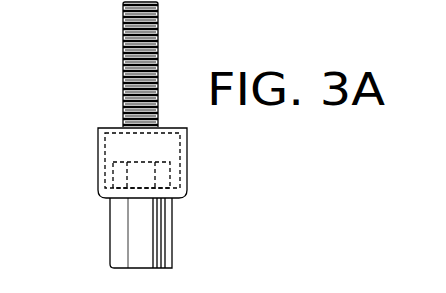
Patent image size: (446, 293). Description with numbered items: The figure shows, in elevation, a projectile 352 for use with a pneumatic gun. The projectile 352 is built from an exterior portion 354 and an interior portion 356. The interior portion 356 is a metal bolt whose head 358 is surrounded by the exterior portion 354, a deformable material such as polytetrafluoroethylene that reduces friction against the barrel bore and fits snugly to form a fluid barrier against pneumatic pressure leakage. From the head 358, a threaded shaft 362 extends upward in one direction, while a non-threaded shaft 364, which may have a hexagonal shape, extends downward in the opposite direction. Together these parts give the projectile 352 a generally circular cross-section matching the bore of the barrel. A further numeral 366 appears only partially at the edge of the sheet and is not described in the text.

The projectile 352 is at (104, 48).
The threaded shaft 362 is at (158, 51).
The exterior portion 354 is at (187, 154).
The head 358 is at (113, 151).
The non-threaded shaft 364 is at (130, 237).
The interior portion 356 is at (172, 223).
The component (partially shown) 366 is at (397, 287).